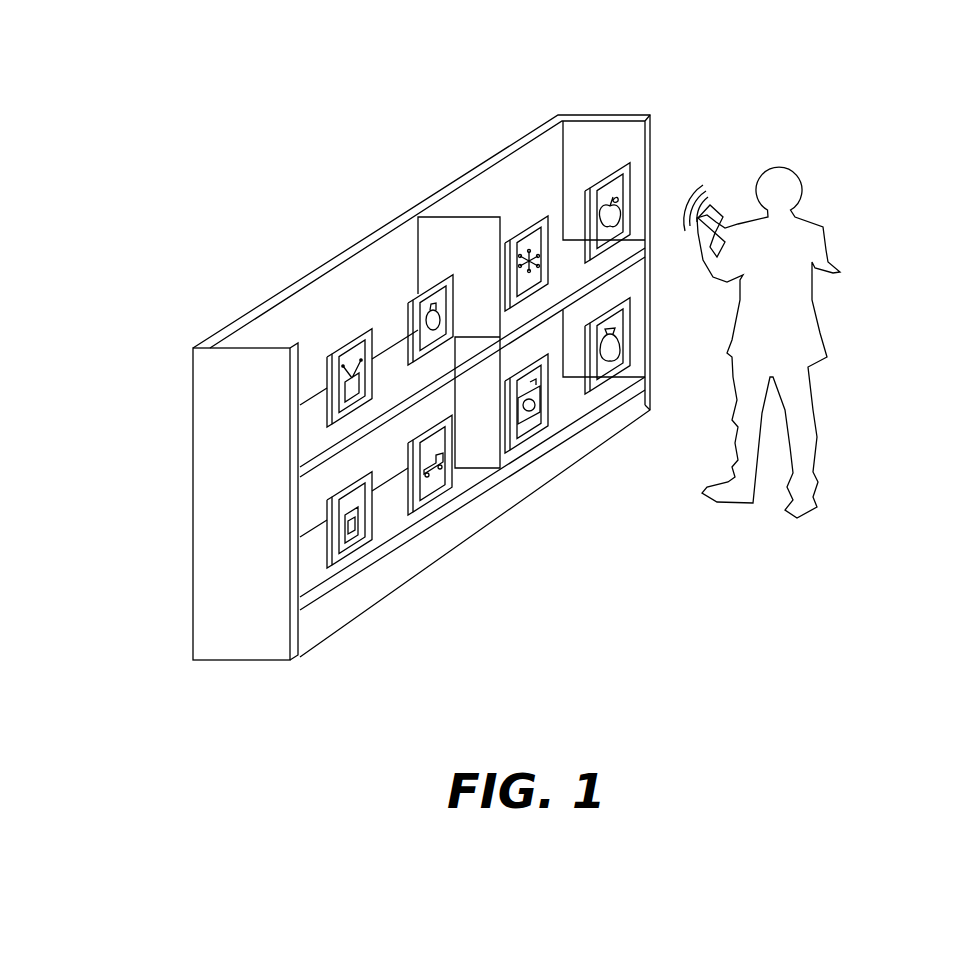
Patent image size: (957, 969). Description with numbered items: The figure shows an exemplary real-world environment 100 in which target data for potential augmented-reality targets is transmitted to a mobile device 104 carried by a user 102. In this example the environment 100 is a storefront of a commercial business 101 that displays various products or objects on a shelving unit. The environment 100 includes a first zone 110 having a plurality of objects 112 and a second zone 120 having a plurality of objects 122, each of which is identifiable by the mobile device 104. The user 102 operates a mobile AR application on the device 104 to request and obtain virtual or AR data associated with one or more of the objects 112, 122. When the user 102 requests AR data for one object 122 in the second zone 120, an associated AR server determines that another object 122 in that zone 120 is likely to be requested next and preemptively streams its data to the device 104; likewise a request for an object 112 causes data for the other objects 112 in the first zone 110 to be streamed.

The real-world environment 100 is at (856, 152).
The commercial business 101 is at (533, 146).
The user 102 is at (840, 272).
The mobile device 104 is at (705, 184).
The first zone 110 is at (368, 320).
The objects 112 is at (327, 408).
The second zone 120 is at (507, 203).
The objects 122 is at (530, 212).